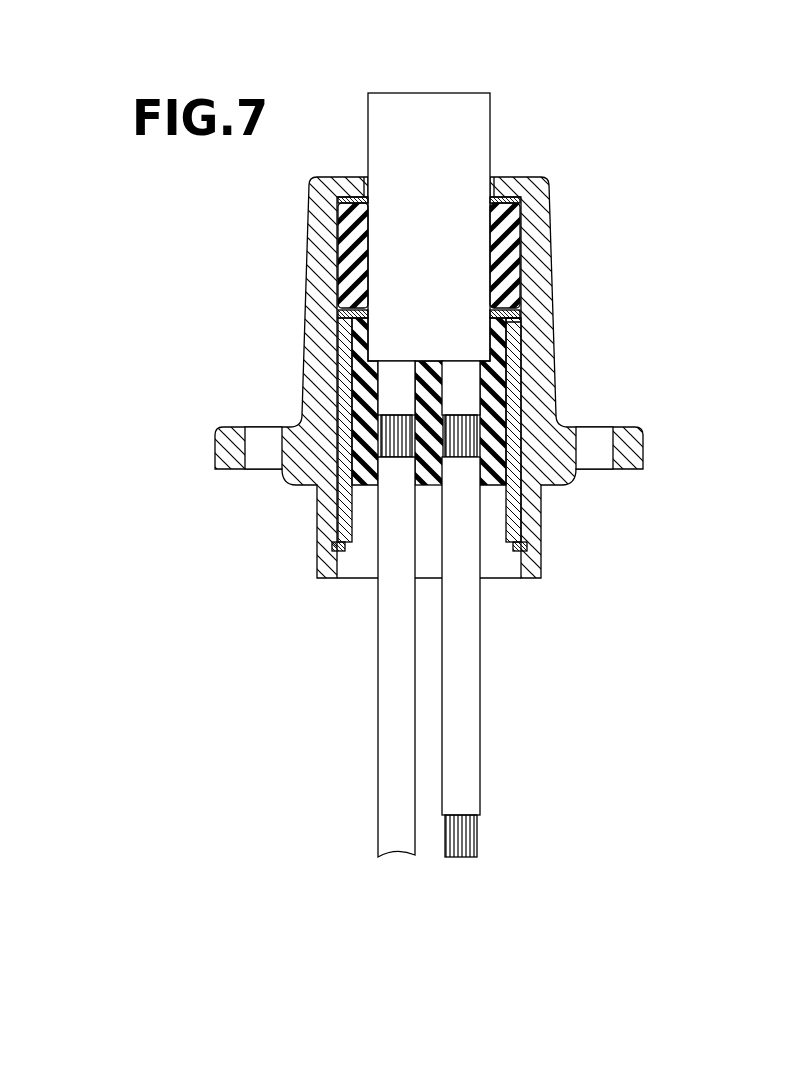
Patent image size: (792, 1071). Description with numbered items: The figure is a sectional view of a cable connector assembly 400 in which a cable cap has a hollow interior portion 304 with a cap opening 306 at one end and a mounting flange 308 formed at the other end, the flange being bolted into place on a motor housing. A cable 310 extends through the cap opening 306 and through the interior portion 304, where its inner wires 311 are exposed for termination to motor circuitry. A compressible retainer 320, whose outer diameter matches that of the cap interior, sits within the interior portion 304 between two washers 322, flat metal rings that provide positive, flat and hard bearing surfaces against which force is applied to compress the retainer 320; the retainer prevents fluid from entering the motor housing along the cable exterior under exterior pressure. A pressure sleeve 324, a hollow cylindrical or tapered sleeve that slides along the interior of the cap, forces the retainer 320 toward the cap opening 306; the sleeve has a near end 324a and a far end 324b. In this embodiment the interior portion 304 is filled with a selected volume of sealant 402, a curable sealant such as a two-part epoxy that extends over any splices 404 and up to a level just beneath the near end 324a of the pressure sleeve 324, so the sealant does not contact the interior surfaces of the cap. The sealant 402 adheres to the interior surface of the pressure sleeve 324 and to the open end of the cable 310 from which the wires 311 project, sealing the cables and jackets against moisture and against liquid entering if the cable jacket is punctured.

The hollow interior portion 304 is at (496, 414).
The cap opening 306 is at (494, 177).
The mounting flange 308 is at (643, 452).
The cable 310 is at (444, 149).
The inner wires 311 is at (436, 363).
The compressible retainer 320 is at (505, 256).
The washers 322 is at (518, 198).
The pressure sleeve 324 is at (515, 505).
The near end 324a is at (512, 553).
The far end 324b is at (517, 340).
The cable connector assembly 400 is at (300, 260).
The sealant 402 is at (360, 383).
The splices 404 is at (395, 432).